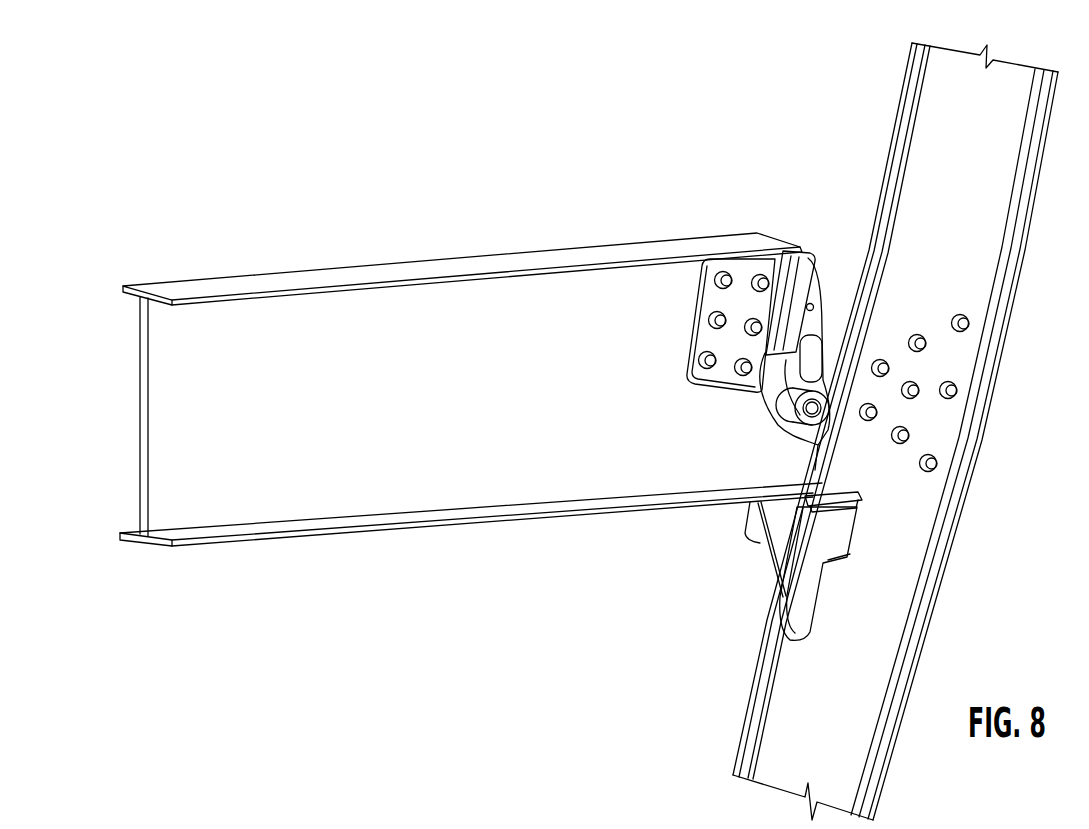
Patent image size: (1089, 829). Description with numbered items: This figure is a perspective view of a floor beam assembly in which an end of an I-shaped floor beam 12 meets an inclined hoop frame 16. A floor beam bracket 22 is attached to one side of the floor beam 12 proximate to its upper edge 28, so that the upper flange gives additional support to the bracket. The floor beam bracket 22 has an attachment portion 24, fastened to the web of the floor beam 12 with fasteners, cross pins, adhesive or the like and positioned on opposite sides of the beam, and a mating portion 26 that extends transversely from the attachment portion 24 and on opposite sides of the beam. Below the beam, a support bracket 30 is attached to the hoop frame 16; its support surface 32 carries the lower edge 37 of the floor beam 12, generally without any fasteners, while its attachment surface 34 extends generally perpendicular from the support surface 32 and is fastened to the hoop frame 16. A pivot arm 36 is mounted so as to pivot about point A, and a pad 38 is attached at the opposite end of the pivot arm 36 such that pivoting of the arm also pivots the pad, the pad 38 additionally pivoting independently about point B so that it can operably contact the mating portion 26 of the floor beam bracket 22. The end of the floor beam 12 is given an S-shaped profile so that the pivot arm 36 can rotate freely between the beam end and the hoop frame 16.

The floor beam 12 is at (471, 383).
The hoop frame 16 is at (879, 431).
The floor beam bracket 22 is at (820, 307).
The attachment portion 24 is at (710, 298).
The mating portion 26 is at (763, 250).
The upper edge 28 is at (447, 263).
The support bracket 30 is at (777, 560).
The support surface 32 is at (860, 483).
The attachment surface 34 is at (787, 622).
The pivot arm 36 is at (820, 345).
The lower edge 37 is at (463, 515).
The pad 38 is at (897, 312).
The pivot point A is at (817, 410).
The pivot point B is at (818, 312).